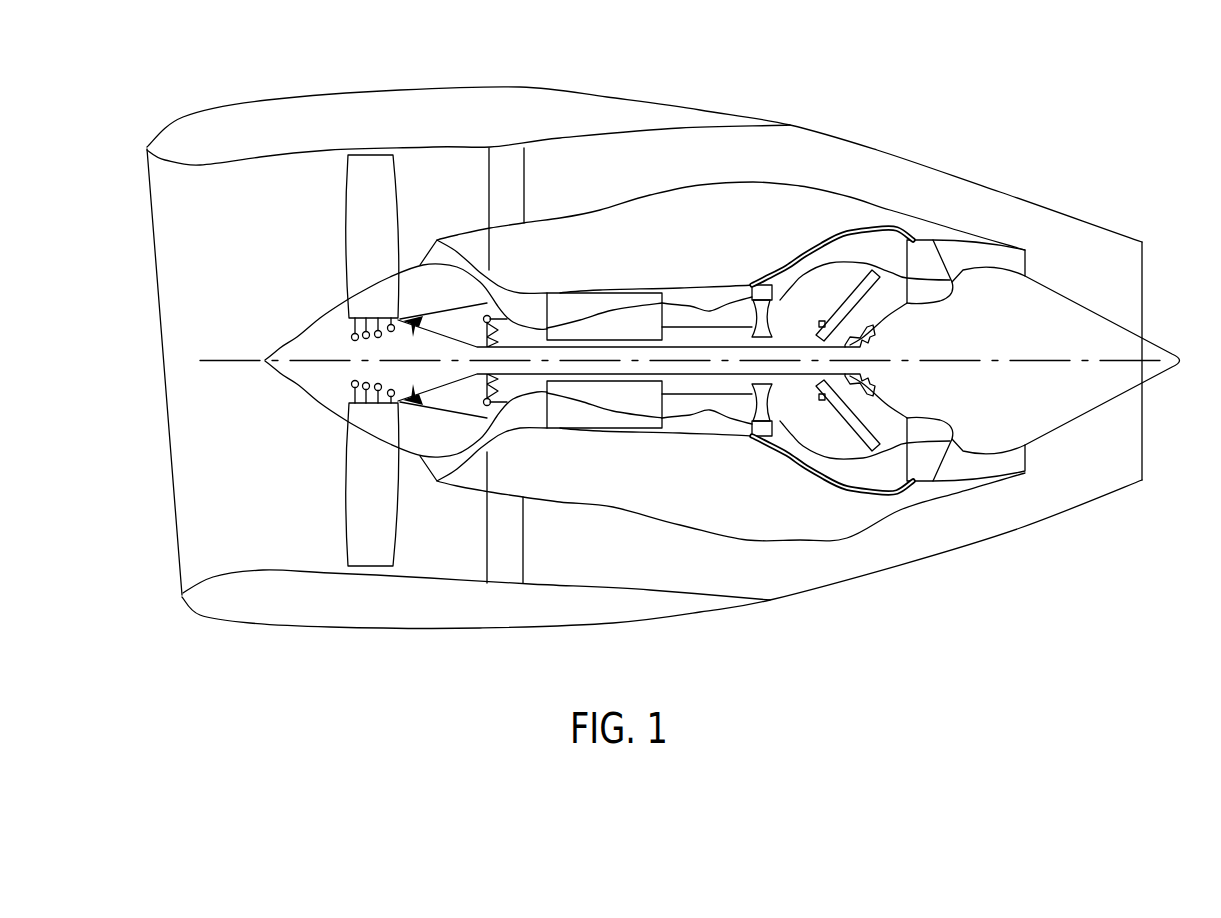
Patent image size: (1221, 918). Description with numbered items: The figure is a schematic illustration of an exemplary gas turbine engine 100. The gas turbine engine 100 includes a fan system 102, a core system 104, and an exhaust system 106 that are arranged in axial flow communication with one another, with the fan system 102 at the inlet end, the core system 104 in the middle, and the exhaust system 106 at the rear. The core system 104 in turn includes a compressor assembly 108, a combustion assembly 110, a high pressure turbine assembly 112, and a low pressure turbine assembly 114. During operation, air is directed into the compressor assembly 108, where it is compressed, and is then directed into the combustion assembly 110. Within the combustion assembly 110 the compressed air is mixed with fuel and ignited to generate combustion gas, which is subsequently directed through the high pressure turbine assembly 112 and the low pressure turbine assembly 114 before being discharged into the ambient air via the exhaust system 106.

The gas turbine engine 100 is at (227, 98).
The fan system 102 is at (330, 225).
The core system 104 is at (567, 213).
The exhaust system 106 is at (1020, 247).
The compressor assembly 108 is at (502, 455).
The combustion assembly 110 is at (690, 438).
The high pressure turbine assembly 112 is at (773, 453).
The low pressure turbine assembly 114 is at (867, 498).